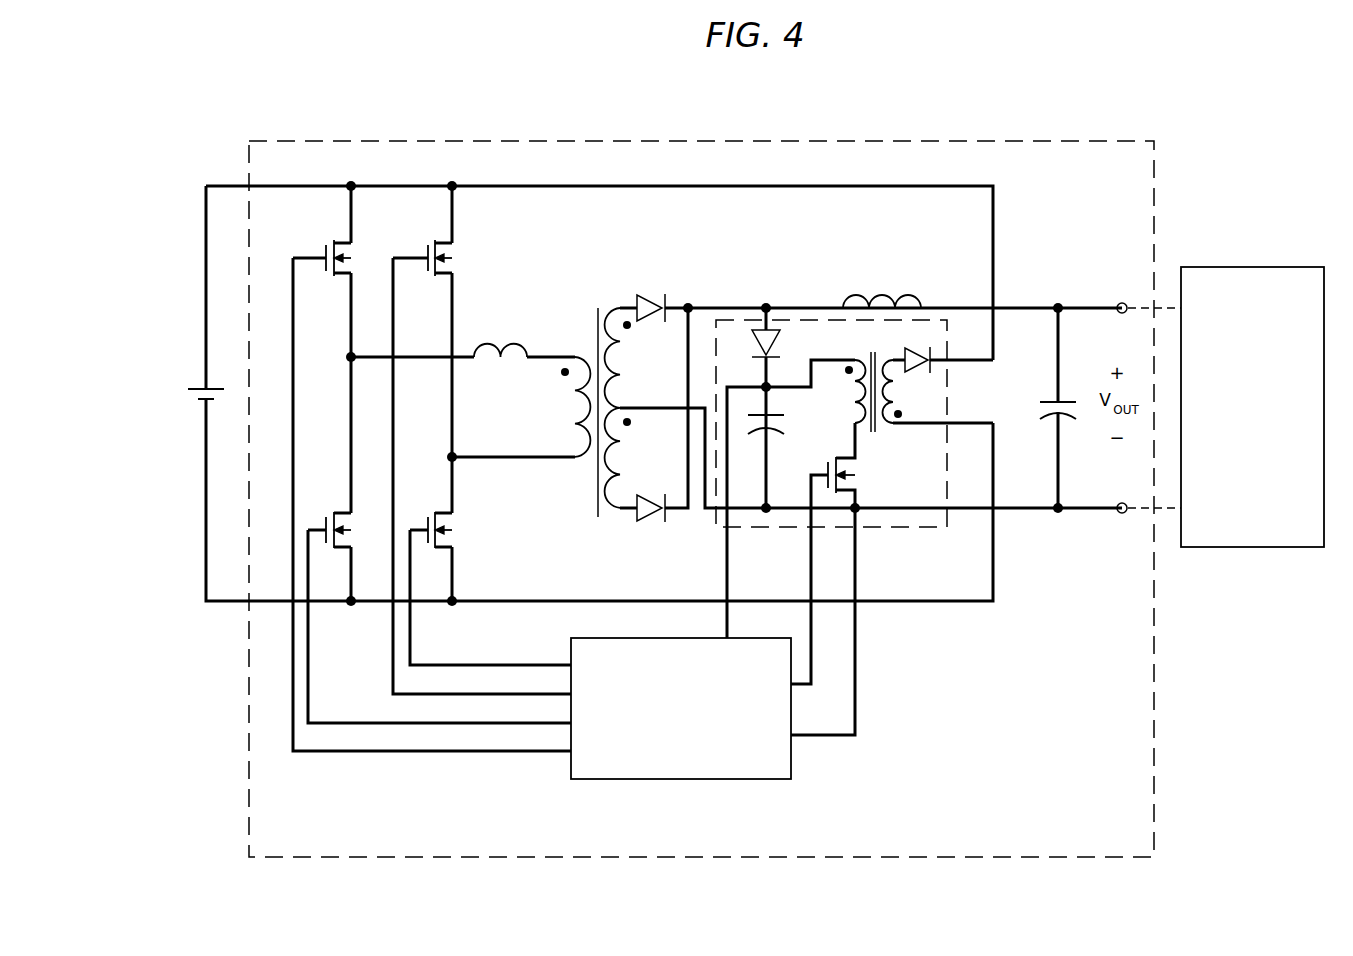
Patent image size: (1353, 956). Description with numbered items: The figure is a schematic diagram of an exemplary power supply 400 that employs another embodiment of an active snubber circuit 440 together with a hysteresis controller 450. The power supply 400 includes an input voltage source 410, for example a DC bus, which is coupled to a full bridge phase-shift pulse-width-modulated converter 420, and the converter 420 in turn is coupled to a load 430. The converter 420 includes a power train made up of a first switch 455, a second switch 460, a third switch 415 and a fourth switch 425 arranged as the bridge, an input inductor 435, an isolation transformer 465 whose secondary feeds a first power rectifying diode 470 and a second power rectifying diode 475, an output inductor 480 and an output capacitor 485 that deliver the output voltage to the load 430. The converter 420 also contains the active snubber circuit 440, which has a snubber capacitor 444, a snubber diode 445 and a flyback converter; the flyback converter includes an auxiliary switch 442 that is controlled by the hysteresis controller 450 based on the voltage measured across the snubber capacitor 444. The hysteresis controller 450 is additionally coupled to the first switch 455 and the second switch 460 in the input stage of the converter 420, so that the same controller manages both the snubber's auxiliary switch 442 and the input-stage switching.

The power supply 400 is at (1075, 106).
The input voltage source 410 is at (195, 386).
The third switch 415 is at (333, 274).
The converter 420 is at (729, 141).
The fourth switch 425 is at (333, 513).
The load 430 is at (1252, 267).
The input inductor 435 is at (474, 339).
The active snubber circuit 440 is at (831, 449).
The auxiliary switch 442 is at (860, 478).
The snubber capacitor 444 is at (784, 430).
The snubber diode 445 is at (782, 346).
The hysteresis controller 450 is at (680, 781).
The first switch 455 is at (435, 274).
The second switch 460 is at (435, 513).
The isolation transformer 465 is at (598, 512).
The first power rectifying diode 470 is at (649, 296).
The second power rectifying diode 475 is at (647, 522).
The output inductor 480 is at (843, 287).
The output capacitor 485 is at (1050, 401).